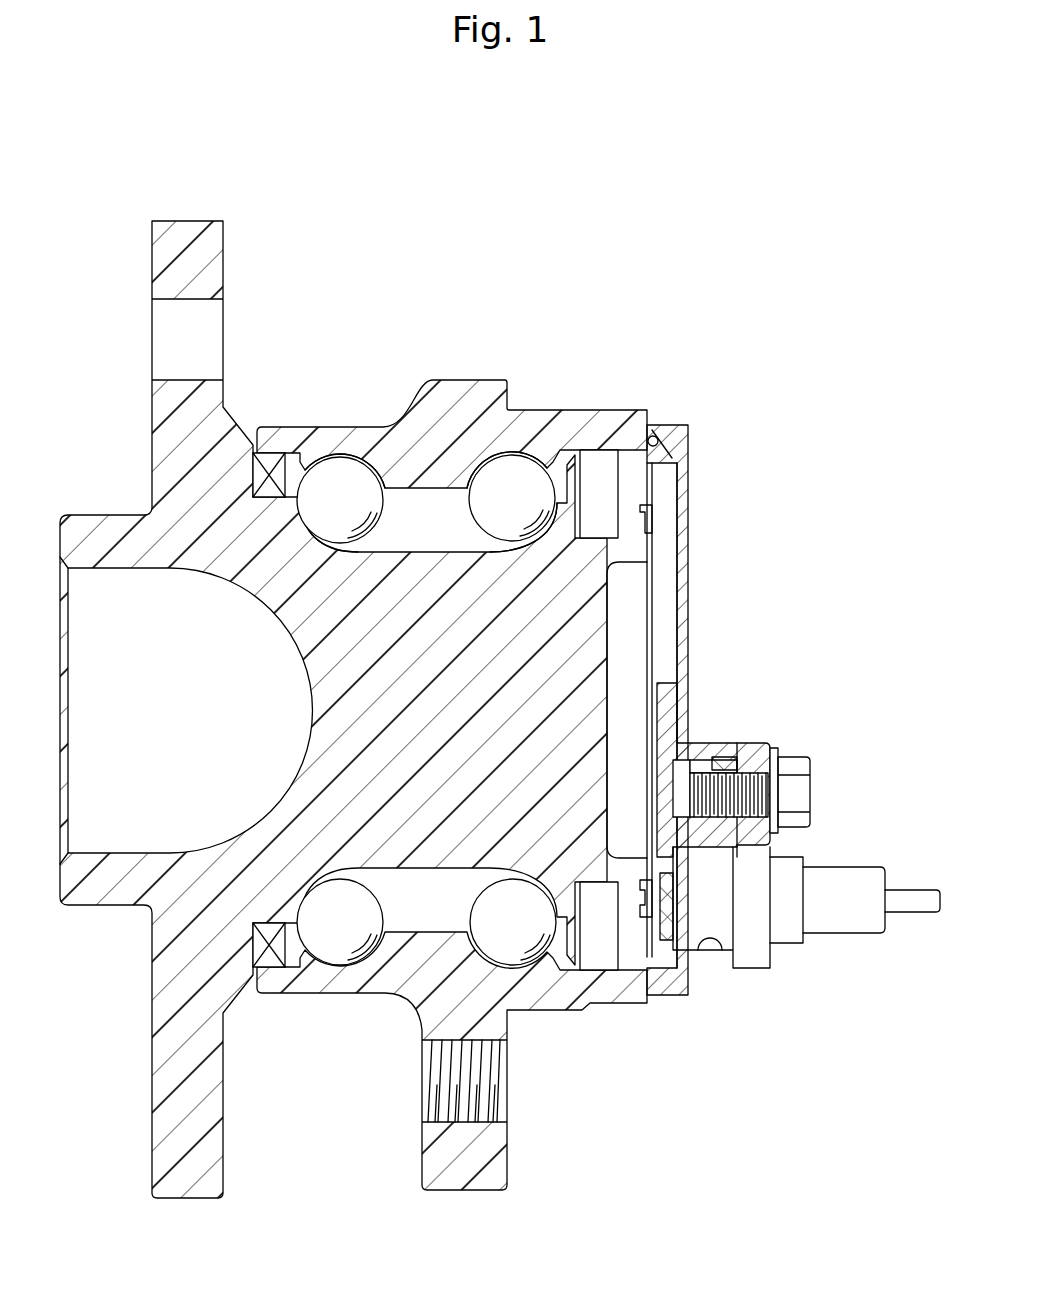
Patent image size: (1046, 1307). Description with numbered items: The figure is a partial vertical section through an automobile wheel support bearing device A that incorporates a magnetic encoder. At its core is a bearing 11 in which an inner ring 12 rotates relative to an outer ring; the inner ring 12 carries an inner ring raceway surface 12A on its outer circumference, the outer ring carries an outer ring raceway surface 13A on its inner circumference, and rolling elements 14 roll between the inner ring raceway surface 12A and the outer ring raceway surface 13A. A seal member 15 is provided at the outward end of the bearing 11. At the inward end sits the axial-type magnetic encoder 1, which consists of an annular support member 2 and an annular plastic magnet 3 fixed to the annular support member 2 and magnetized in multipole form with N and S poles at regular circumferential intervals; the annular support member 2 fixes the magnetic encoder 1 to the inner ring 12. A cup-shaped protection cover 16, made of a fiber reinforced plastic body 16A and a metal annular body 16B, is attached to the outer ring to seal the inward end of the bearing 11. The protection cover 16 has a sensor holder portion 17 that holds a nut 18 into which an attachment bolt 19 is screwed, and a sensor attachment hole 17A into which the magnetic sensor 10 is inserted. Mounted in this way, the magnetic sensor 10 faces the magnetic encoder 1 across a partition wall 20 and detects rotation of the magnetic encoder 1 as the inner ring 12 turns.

The magnetic encoder 1 is at (721, 710).
The annular support member 2 is at (662, 546).
The annular plastic magnet 3 is at (667, 525).
The magnetic sensor 10 is at (840, 933).
The bearing 11 is at (439, 308).
The inner ring 12 is at (300, 713).
The inner ring raceway surface 12A is at (357, 462).
The outer ring raceway surface 13A is at (303, 460).
The rolling elements 14 is at (328, 945).
The seal member 15 is at (270, 455).
The protection cover 16 is at (764, 686).
The fiber reinforced plastic body 16A is at (706, 494).
The metal annular body 16B is at (672, 446).
The sensor holder portion 17 is at (798, 850).
The sensor attachment hole 17A is at (722, 947).
The nut 18 is at (724, 762).
The attachment bolt 19 is at (806, 786).
The partition wall 20 is at (674, 900).
The automobile wheel support bearing device A is at (697, 339).